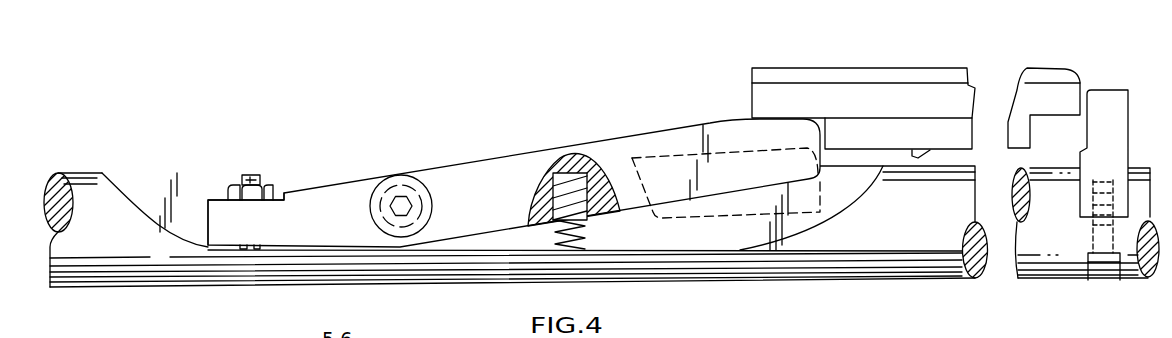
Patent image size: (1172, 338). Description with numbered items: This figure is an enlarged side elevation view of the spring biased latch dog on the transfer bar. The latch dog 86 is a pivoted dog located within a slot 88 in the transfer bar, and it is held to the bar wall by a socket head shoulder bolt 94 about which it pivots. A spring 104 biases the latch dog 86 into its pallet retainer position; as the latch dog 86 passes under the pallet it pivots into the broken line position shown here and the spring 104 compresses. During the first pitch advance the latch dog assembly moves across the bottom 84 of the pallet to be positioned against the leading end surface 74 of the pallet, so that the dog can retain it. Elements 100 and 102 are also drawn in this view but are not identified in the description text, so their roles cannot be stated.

The leading end surface 74 is at (516, 252).
The bottom 84 is at (918, 157).
The latch dog 86 is at (665, 142).
The slot 88 is at (732, 250).
The socket head shoulder bolt 94 is at (402, 175).
The mounting block 100 is at (473, 245).
The plate 102 is at (823, 148).
The spring 104 is at (597, 242).